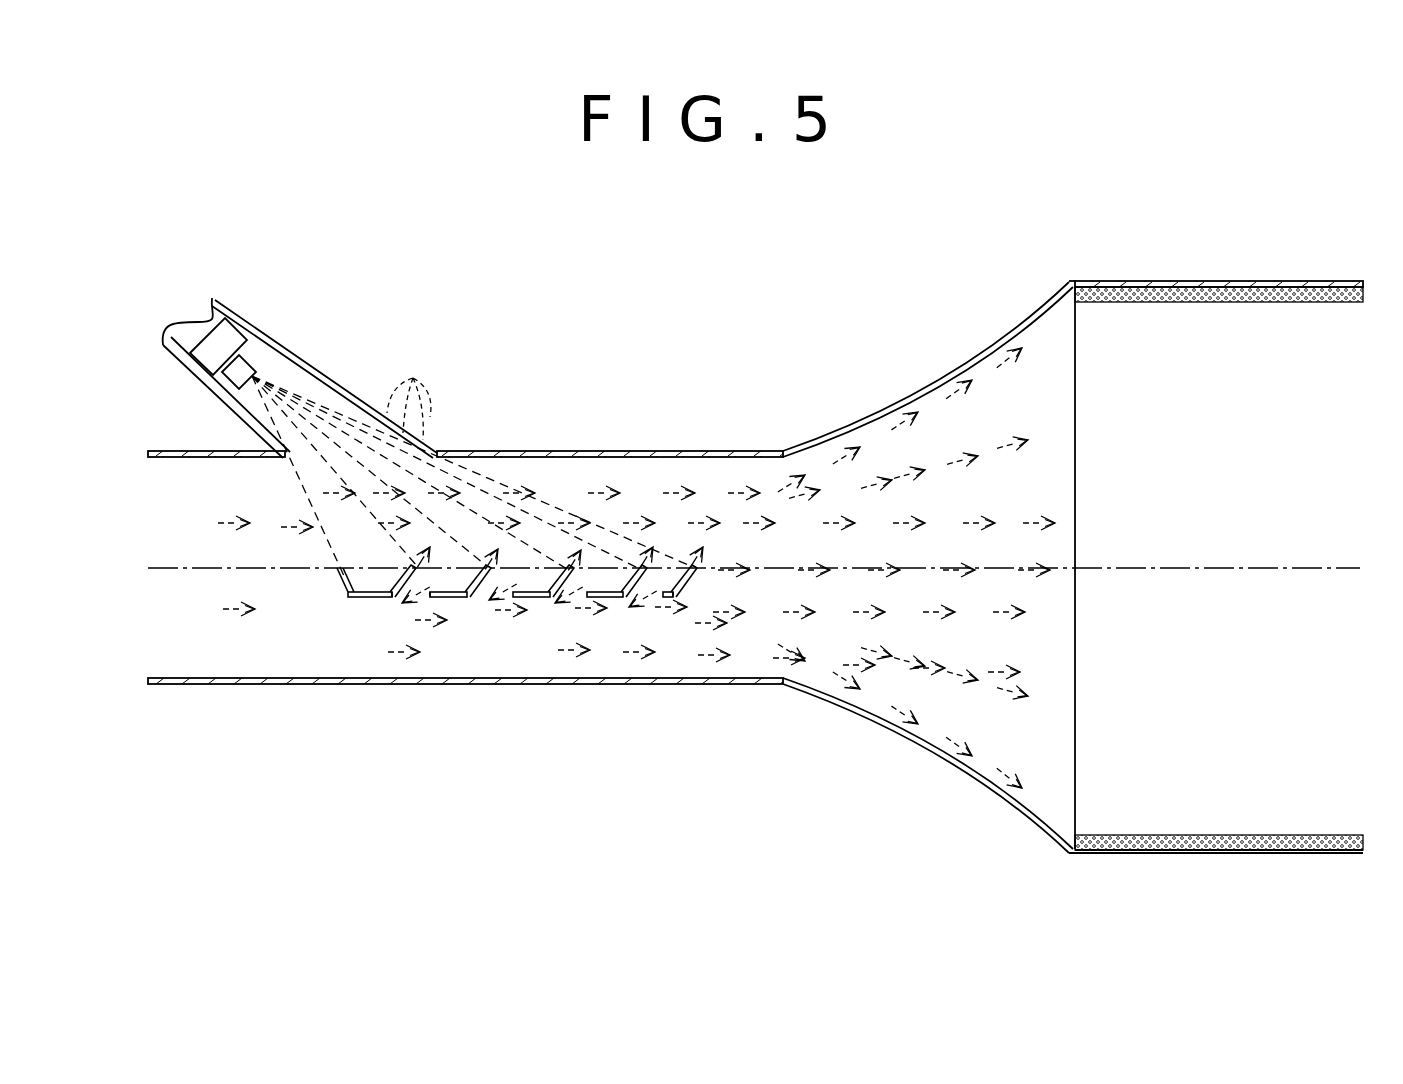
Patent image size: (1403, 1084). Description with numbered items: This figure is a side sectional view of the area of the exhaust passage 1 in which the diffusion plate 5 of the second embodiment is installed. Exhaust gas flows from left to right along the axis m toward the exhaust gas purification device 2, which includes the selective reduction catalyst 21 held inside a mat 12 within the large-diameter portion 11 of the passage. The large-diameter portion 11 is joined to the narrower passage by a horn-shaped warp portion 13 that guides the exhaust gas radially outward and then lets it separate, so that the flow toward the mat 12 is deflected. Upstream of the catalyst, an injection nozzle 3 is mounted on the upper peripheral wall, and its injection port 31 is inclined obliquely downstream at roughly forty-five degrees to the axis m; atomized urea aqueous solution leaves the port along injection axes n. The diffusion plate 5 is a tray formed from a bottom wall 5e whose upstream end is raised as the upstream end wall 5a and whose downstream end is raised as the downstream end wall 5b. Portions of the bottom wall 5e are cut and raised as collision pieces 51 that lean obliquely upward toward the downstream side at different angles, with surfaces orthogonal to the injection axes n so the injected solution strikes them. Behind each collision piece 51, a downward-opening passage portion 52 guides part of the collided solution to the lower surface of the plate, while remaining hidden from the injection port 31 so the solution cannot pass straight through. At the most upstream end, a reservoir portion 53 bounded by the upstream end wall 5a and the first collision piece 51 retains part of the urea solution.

The exhaust passage 1 is at (707, 450).
The exhaust gas purification device 2 is at (1170, 851).
The injection nozzle 3 is at (238, 322).
The injection port 31 is at (257, 371).
The diffusion plate 5 is at (341, 583).
The upstream end wall 5a is at (348, 587).
The downstream end wall 5b is at (680, 593).
The bottom wall 5e is at (447, 593).
The collision piece 51 is at (387, 600).
The passage portion 52 is at (403, 586).
The reservoir portion 53 is at (378, 591).
The large-diameter portion 11 is at (1142, 282).
The mat 12 is at (1247, 287).
The warp portion 13 is at (998, 343).
The selective reduction catalyst 21 is at (1293, 822).
The injection axis n is at (472, 460).
The axis of the exhaust passage m is at (1177, 568).